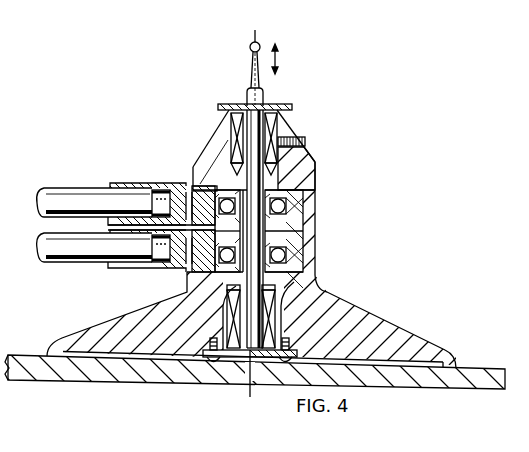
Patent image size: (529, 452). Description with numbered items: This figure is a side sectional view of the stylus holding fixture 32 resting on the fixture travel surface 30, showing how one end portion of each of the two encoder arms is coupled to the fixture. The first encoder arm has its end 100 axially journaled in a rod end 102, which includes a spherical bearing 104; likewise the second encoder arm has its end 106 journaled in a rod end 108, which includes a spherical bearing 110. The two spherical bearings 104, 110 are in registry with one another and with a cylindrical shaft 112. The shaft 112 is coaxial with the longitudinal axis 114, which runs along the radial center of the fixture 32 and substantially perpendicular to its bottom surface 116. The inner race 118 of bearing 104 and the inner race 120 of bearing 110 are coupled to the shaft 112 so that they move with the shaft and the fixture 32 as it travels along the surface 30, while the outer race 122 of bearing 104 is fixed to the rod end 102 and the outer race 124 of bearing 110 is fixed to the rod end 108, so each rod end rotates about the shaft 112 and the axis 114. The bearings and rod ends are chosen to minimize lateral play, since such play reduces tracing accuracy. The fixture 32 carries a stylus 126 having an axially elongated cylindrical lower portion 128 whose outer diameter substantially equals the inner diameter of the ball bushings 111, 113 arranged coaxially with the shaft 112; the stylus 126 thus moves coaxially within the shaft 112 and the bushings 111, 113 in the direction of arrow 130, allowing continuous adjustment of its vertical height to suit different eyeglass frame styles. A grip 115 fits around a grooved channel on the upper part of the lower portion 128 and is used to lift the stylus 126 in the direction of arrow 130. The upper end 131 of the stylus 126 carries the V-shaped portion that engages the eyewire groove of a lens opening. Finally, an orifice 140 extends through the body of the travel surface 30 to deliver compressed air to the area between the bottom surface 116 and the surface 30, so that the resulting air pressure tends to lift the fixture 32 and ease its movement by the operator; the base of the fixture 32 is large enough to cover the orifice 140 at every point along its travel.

The fixture travel surface 30 is at (474, 367).
The stylus holding fixture 32 is at (362, 307).
The end of encoder arm 100 is at (74, 188).
The rod end 102 is at (127, 183).
The spherical bearing 104 is at (315, 192).
The end of encoder arm 106 is at (50, 264).
The rod end 108 is at (117, 270).
The spherical bearing 110 is at (287, 256).
The ball bushing 111 is at (275, 318).
The cylindrical shaft 112 is at (284, 286).
The ball bushing 113 is at (241, 125).
The longitudinal axis 114 is at (257, 33).
The grip 115 is at (292, 108).
The bottom surface 116 is at (327, 357).
The inner race 118 is at (272, 184).
The inner race 120 is at (292, 228).
The outer race 122 is at (232, 171).
The outer race 124 is at (229, 274).
The stylus 126 is at (263, 98).
The cylindrical lower portion 128 is at (228, 300).
The arrow 130 is at (276, 62).
The upper end of stylus 131 is at (251, 45).
The orifice 140 is at (249, 386).